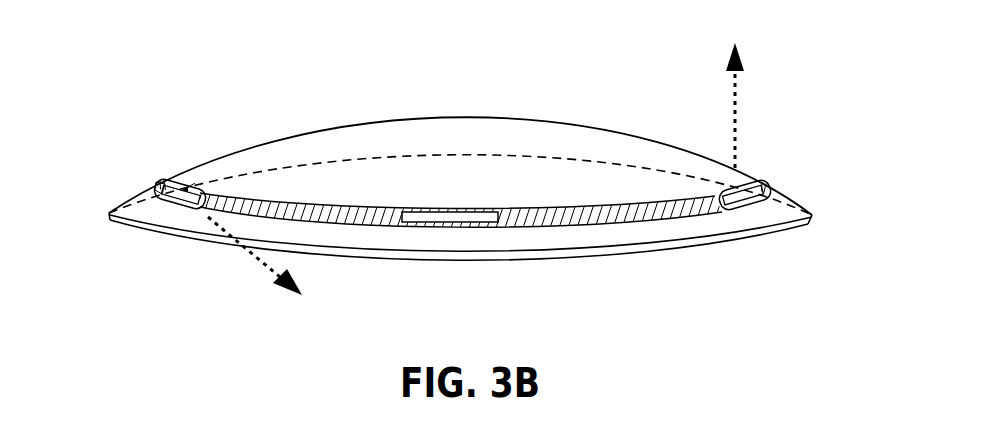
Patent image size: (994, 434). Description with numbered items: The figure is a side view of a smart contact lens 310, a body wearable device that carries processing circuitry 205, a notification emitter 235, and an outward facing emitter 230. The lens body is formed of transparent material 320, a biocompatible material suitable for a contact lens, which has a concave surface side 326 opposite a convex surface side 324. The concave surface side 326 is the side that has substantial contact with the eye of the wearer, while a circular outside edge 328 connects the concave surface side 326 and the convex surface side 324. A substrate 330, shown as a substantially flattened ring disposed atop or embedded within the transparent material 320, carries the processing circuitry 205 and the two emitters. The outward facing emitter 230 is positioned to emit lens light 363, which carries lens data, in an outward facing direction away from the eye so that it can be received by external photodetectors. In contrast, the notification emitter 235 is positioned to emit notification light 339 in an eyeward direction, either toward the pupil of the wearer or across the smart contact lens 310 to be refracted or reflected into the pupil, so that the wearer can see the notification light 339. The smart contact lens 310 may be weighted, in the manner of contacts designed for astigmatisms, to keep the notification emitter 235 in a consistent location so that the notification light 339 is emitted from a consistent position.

The processing circuitry 205 is at (487, 217).
The outward facing emitter 230 is at (766, 183).
The notification emitter 235 is at (168, 180).
The smart contact lens 310 is at (456, 205).
The transparent material 320 is at (470, 266).
The convex surface side 324 is at (717, 155).
The concave surface side 326 is at (738, 217).
The circular outside edge 328 is at (617, 252).
The substrate 330 is at (160, 181).
The notification light 339 is at (305, 285).
The lens light 363 is at (724, 90).